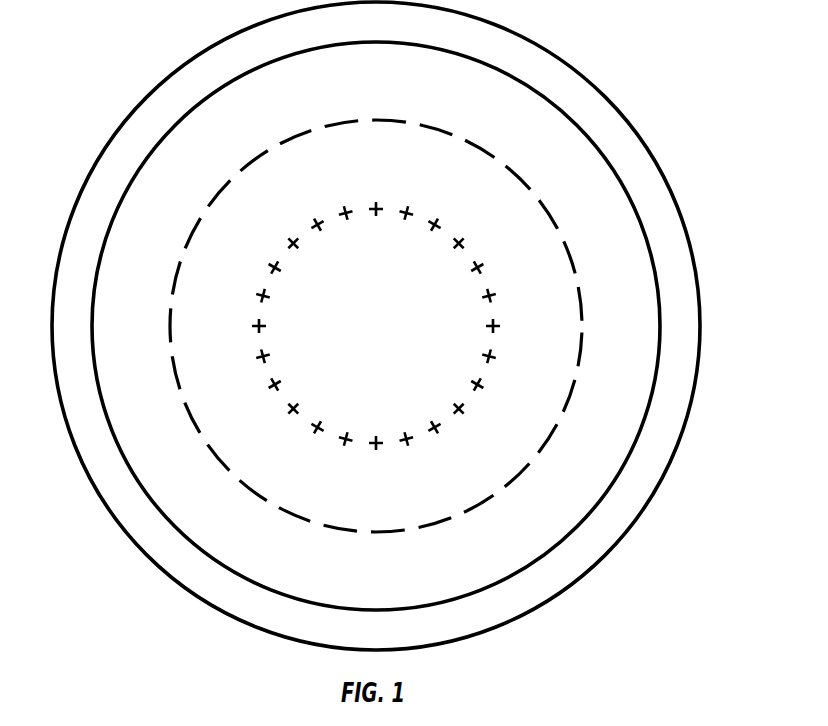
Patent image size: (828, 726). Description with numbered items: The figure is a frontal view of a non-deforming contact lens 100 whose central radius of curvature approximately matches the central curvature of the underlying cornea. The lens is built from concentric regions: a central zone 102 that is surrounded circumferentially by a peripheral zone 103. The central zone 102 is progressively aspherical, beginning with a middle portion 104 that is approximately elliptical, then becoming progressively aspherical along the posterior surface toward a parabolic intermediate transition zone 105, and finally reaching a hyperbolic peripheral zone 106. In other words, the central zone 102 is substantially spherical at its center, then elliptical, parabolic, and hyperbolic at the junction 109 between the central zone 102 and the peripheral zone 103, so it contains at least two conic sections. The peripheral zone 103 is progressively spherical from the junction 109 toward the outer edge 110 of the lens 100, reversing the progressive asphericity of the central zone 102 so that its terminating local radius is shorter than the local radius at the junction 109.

The non-deforming contact lens 100 is at (147, 45).
The central zone 102 is at (52, 318).
The peripheral zone 103 is at (670, 258).
The middle portion 104 is at (378, 257).
The parabolic intermediate transition zone 105 is at (508, 217).
The hyperbolic peripheral zone 106 is at (608, 230).
The junction 109 is at (652, 395).
The outer edge 110 is at (701, 325).